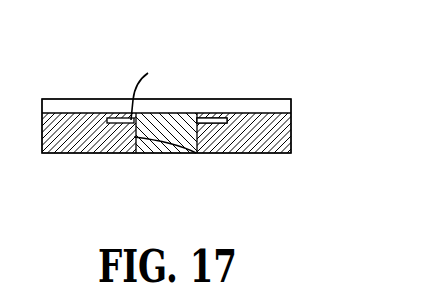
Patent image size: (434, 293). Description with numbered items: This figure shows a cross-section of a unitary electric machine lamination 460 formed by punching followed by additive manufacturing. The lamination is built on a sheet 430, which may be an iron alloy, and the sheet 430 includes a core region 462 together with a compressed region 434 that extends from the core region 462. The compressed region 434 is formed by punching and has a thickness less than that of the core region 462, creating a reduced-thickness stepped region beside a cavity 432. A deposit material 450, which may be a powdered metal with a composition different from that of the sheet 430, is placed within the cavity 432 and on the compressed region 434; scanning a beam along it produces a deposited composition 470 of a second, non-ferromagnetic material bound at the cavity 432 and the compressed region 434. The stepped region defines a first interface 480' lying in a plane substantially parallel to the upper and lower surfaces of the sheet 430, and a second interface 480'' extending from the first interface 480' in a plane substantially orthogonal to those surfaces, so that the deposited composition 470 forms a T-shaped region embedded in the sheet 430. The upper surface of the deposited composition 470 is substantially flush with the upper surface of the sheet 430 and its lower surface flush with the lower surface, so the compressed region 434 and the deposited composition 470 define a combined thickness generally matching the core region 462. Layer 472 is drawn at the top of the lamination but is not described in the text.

The sheet 430 is at (237, 157).
The top layer 472 is at (62, 98).
The core region 462 is at (92, 156).
The cavity 432 is at (184, 156).
The compressed region 434 is at (124, 120).
The deposit material 450 is at (186, 120).
The deposited composition 470 is at (224, 88).
The first interface 480' is at (155, 86).
The second interface 480'' is at (182, 166).
The unitary electric machine lamination 460 is at (188, 39).